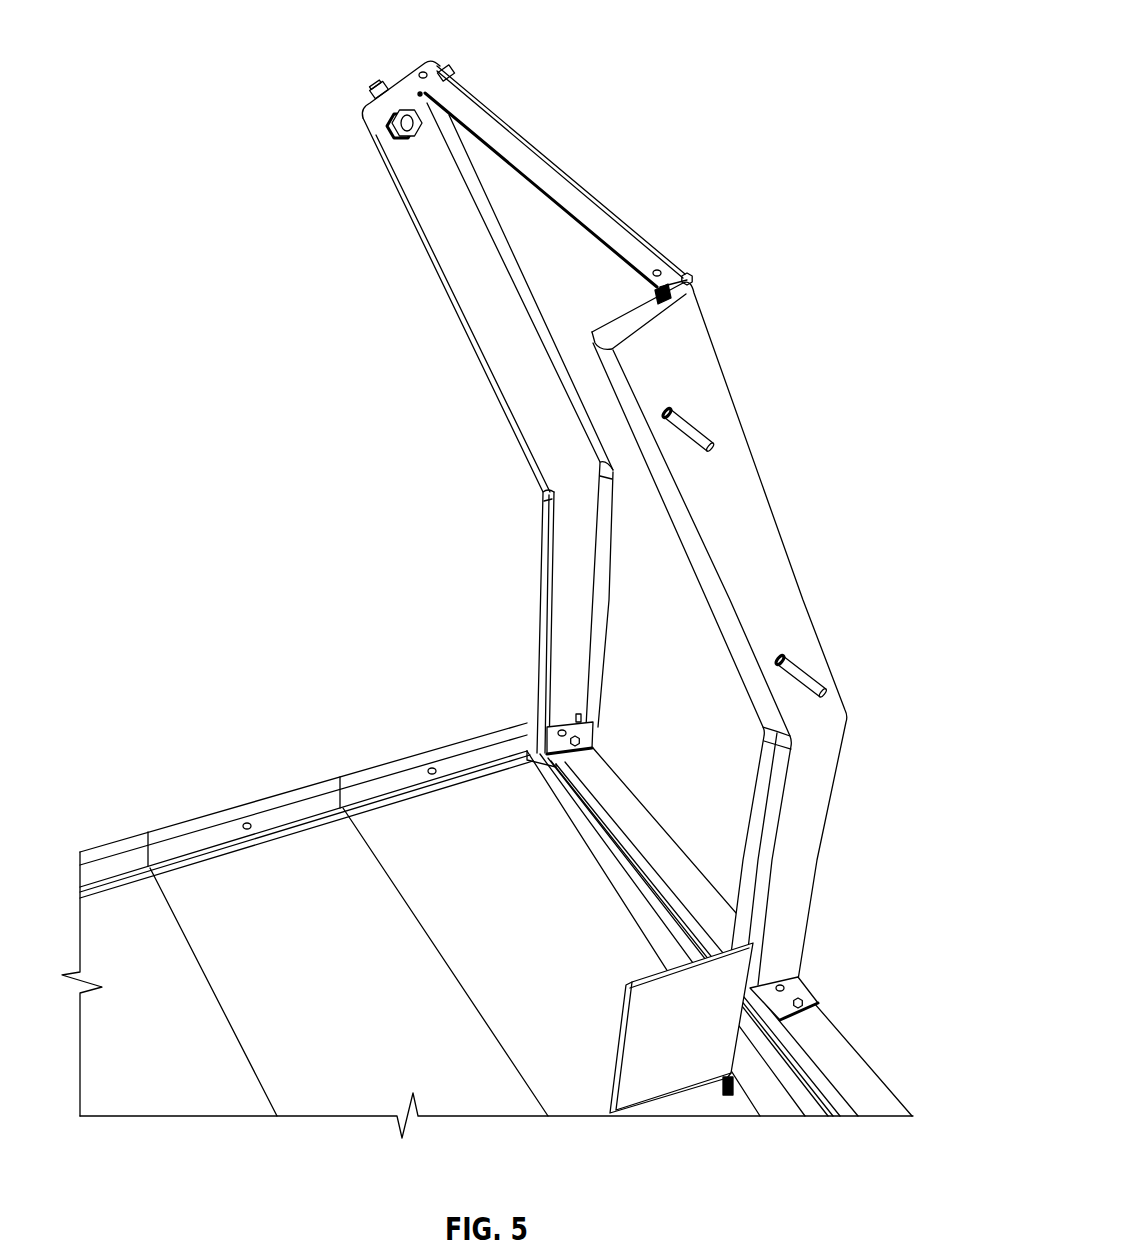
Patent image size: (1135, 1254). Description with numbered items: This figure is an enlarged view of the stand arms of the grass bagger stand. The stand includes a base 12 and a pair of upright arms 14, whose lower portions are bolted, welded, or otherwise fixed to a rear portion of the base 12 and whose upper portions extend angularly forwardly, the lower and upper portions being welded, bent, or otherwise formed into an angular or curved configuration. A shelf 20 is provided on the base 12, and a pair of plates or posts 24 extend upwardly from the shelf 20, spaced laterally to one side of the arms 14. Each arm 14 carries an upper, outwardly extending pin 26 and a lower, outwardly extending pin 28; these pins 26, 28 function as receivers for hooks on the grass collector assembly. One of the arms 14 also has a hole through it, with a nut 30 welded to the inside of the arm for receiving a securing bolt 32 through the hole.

The base 12 is at (612, 797).
The upright arms 14 is at (515, 370).
The shelf 20 is at (352, 1022).
The plates or posts 24 is at (697, 1035).
The upper outwardly extending pin 26 is at (690, 427).
The lower outwardly extending pin 28 is at (807, 677).
The nut 30 is at (398, 131).
The securing bolt 32 is at (378, 90).